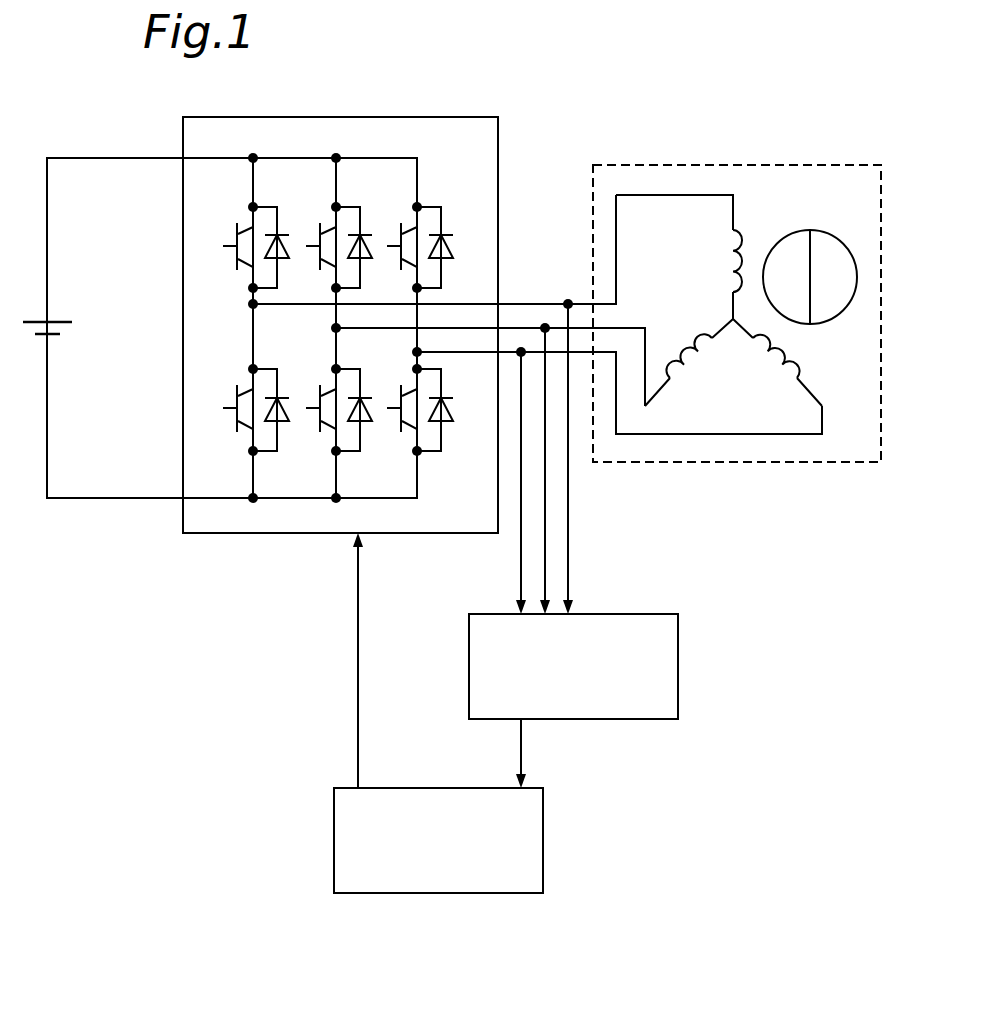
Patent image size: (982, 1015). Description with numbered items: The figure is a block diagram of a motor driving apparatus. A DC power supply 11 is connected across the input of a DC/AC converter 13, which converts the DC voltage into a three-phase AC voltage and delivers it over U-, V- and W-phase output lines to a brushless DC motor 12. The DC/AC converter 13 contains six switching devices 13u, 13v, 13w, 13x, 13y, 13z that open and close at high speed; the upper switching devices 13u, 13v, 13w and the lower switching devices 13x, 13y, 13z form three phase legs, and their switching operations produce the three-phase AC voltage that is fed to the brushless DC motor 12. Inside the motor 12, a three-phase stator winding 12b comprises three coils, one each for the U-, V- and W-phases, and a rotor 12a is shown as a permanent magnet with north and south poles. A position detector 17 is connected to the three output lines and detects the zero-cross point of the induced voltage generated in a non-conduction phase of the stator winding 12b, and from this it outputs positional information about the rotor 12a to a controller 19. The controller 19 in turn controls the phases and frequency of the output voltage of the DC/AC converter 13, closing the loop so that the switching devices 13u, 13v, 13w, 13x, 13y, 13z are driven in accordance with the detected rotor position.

The DC power supply 11 is at (68, 316).
The brushless DC motor 12 is at (667, 165).
The rotor 12a is at (811, 230).
The three-phase stator winding 12b is at (696, 306).
The DC/AC converter 13 is at (500, 137).
The switching device 13u is at (242, 222).
The switching device 13v is at (325, 222).
The switching device 13w is at (406, 222).
The switching device 13x is at (242, 385).
The switching device 13y is at (325, 385).
The switching device 13z is at (406, 385).
The position detector 17 is at (680, 663).
The controller 19 is at (546, 840).